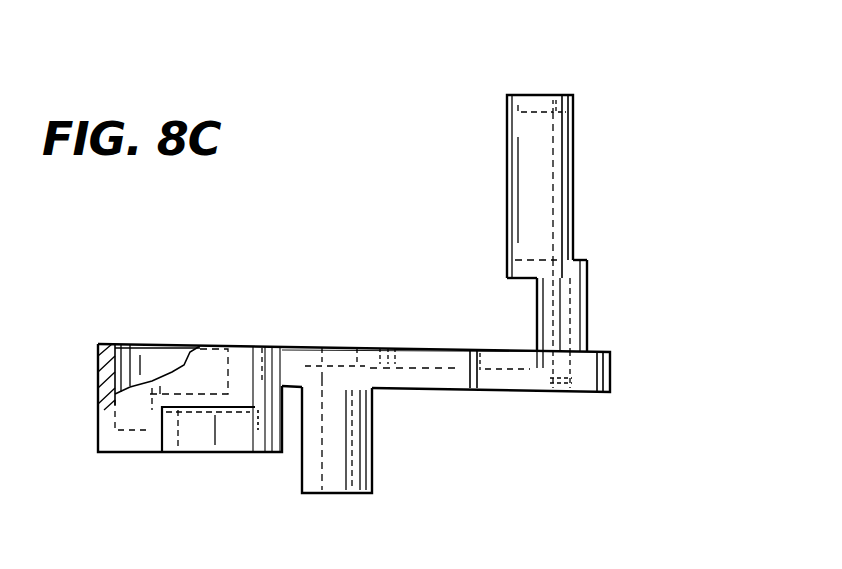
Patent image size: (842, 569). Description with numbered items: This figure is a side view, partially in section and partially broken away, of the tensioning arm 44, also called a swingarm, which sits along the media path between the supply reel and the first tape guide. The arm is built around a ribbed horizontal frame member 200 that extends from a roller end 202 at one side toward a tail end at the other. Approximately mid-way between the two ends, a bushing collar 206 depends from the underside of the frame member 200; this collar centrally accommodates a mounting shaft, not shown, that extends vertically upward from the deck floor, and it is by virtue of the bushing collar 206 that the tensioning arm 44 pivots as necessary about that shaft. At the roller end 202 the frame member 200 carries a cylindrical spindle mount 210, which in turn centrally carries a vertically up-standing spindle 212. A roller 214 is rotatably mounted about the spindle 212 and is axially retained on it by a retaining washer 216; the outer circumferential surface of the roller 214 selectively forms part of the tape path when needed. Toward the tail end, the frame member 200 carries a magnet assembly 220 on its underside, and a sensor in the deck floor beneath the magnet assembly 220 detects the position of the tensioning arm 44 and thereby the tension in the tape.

The tensioning arm 44 is at (645, 69).
The ribbed horizontal frame member 200 is at (494, 375).
The roller end 202 is at (597, 374).
The bushing collar 206 is at (372, 430).
The cylindrical spindle mount 210 is at (588, 305).
The spindle 212 is at (575, 196).
The roller 214 is at (525, 172).
The retaining washer 216 is at (530, 97).
The magnet assembly 220 is at (205, 438).